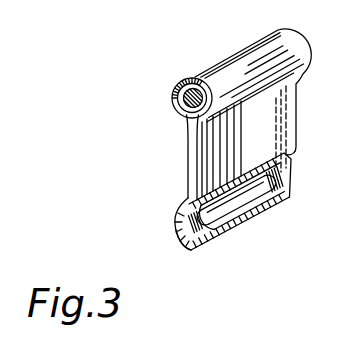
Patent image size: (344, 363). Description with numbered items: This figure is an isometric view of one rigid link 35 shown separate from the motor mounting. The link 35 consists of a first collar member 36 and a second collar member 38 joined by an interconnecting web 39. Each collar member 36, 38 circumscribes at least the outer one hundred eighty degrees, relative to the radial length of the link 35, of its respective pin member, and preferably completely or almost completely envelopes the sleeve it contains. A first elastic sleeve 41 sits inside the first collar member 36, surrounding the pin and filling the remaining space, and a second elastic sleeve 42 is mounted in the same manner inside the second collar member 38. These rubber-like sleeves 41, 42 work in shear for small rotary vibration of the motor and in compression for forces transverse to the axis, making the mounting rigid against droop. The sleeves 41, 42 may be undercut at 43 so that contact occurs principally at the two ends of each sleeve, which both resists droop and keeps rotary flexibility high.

The rigid link 35 is at (273, 132).
The first collar member 36 is at (175, 93).
The second collar member 38 is at (178, 217).
The interconnecting web 39 is at (188, 163).
The first elastic sleeve 41 is at (187, 84).
The second elastic sleeve 42 is at (183, 246).
The undercut 43 is at (248, 206).